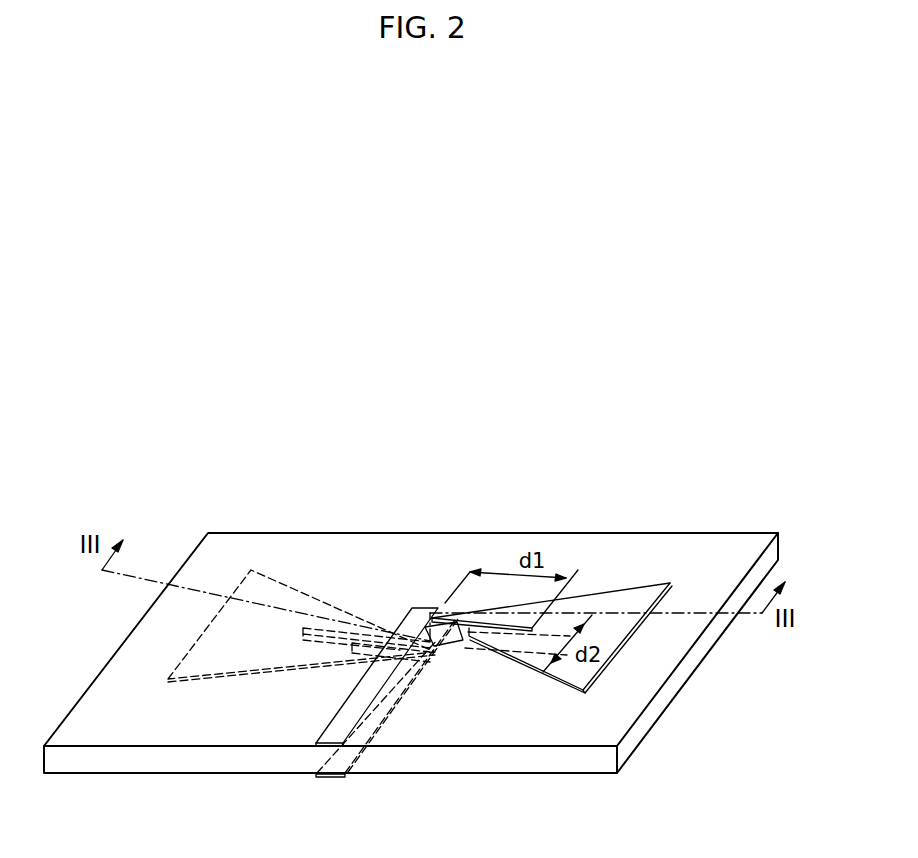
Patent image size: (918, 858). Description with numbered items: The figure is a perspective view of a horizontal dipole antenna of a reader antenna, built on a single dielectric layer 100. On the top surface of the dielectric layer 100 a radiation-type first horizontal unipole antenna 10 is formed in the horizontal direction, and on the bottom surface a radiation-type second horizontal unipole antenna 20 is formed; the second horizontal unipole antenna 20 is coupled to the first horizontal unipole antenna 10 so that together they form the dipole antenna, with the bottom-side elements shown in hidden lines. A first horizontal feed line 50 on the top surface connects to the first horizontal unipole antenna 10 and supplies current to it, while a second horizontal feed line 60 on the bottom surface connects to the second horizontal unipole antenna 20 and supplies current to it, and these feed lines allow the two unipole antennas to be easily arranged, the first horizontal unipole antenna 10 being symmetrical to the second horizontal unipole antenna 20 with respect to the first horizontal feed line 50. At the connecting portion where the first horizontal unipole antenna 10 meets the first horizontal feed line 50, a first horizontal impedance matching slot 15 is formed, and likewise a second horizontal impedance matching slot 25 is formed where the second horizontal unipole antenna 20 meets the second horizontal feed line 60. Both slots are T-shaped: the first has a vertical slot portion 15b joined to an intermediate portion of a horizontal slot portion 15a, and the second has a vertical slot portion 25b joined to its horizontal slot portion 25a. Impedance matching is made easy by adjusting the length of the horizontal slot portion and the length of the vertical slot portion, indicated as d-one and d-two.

The first horizontal unipole antenna 10 is at (653, 590).
The first horizontal impedance matching slot 15 is at (548, 553).
The horizontal slot portion 15a is at (490, 628).
The vertical slot portion 15b is at (515, 632).
The second horizontal unipole antenna 20 is at (251, 570).
The second horizontal impedance matching slot 25 is at (347, 537).
The horizontal slot portion 25a is at (333, 633).
The vertical slot portion 25b is at (288, 637).
The first horizontal feed line 50 is at (333, 722).
The second horizontal feed line 60 is at (330, 777).
The dielectric layer 100 is at (657, 707).